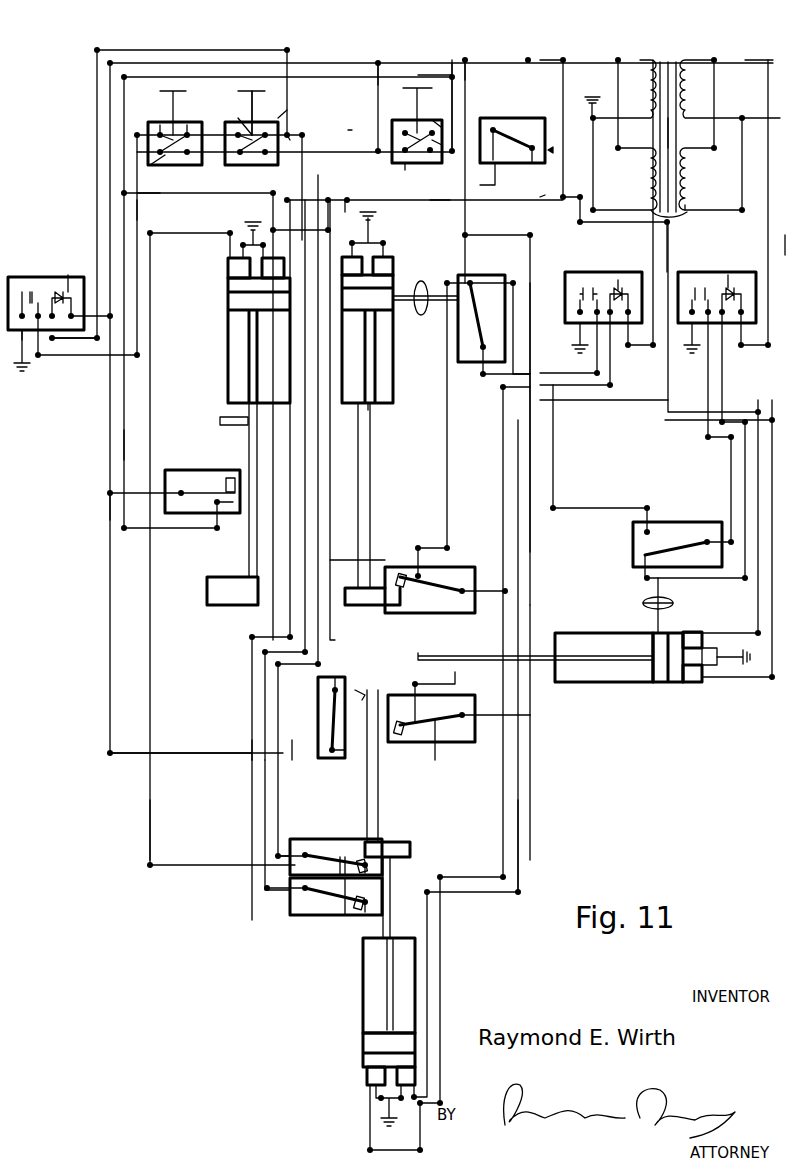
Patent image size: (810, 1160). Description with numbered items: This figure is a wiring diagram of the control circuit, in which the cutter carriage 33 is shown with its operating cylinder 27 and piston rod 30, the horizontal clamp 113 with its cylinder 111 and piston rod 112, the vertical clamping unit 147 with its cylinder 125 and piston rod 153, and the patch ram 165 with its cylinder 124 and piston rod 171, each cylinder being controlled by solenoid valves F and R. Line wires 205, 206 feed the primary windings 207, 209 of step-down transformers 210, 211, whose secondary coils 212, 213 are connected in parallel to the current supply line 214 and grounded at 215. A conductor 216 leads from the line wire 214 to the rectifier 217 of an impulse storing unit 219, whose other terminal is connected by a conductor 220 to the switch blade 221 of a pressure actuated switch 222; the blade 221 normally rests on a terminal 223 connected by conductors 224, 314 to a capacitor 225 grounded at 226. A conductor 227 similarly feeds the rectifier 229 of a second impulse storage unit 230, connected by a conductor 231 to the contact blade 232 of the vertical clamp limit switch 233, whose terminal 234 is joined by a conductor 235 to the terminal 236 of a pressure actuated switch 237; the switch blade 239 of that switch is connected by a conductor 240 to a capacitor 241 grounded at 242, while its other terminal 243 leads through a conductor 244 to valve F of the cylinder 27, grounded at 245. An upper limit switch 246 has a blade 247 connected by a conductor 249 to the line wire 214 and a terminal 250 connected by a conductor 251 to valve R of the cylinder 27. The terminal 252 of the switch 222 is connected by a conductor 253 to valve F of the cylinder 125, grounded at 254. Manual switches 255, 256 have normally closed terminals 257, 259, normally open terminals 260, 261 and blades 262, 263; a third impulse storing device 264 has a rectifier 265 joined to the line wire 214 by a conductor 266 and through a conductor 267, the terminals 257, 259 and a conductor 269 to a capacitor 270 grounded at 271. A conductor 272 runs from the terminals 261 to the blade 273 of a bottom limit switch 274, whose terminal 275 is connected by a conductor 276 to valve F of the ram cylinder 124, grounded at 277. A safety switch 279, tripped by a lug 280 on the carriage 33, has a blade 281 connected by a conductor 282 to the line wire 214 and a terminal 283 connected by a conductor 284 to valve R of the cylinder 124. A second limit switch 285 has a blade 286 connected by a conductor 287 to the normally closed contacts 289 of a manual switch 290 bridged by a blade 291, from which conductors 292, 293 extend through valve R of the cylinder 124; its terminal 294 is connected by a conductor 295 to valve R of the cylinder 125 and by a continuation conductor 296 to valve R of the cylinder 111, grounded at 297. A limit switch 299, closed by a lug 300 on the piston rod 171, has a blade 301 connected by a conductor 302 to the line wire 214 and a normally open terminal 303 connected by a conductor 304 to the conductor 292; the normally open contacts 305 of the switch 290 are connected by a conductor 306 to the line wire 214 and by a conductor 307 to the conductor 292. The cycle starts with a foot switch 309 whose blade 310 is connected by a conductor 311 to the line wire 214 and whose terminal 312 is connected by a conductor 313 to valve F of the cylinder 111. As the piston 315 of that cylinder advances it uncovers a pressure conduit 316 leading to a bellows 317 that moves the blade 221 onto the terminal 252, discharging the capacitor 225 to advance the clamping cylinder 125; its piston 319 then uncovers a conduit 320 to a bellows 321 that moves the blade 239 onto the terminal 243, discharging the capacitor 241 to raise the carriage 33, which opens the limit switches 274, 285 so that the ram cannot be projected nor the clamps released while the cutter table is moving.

The operating cylinder 27 is at (363, 1015).
The piston rod 30 is at (388, 985).
The cutter carriage 33 is at (386, 811).
The operating cylinder 111 is at (610, 690).
The piston rod 112 is at (545, 650).
The horizontal clamp 113 is at (450, 655).
The operating cylinder 124 is at (225, 375).
The operating cylinder 125 is at (384, 415).
The vertical clamping unit 147 is at (355, 612).
The piston rod 153 is at (372, 473).
The patch ram 165 is at (238, 618).
The piston rod 171 is at (252, 440).
The line wire 205 is at (765, 58).
The line wire 206 is at (765, 118).
The primary winding 207 is at (686, 65).
The primary winding 209 is at (688, 160).
The step-down transformer 210 is at (665, 60).
The step-down transformer 211 is at (690, 140).
The secondary coil 212 is at (648, 65).
The secondary coil 213 is at (690, 200).
The current supply line 214 is at (545, 60).
The ground 215 is at (610, 140).
The conductor 216 is at (570, 105).
The rectifier 217 is at (790, 228).
The impulse storing unit 219 is at (745, 262).
The conductor 220 is at (728, 360).
The switch blade 221 is at (683, 540).
The pressure actuated switch 222 is at (637, 545).
The terminal 223 is at (645, 565).
The conductor 224 is at (720, 540).
The capacitor 225 is at (712, 250).
The ground 226 is at (692, 345).
The conductor 227 is at (680, 235).
The rectifier 229 is at (640, 258).
The impulse storage unit 230 is at (652, 200).
The conductor 231 is at (605, 378).
The contact blade 232 is at (447, 582).
The vertical clamp limit switch 233 is at (450, 617).
The terminal 234 is at (415, 574).
The conductor 235 is at (445, 473).
The terminal 236 is at (468, 265).
The pressure actuated switch 237 is at (459, 376).
The switch blade 239 is at (478, 337).
The conductor 240 is at (493, 378).
The capacitor 241 is at (590, 283).
The ground 242 is at (585, 340).
The terminal 243 is at (510, 268).
The conductor 244 is at (530, 570).
The ground 245 is at (389, 1105).
The limit switch 246 is at (449, 735).
The blade 247 is at (437, 760).
The conductor 249 is at (530, 700).
The terminal 250 is at (395, 712).
The conductor 251 is at (518, 845).
The terminal 252 is at (650, 528).
The conductor 253 is at (553, 455).
The ground 254 is at (385, 222).
The manually operable switch 255 is at (146, 128).
The manually operable switch 256 is at (245, 118).
The normally closed terminals 257 is at (160, 133).
The normally closed terminals 259 is at (285, 118).
The normally open terminals 260 is at (165, 165).
The normally open terminals 261 is at (235, 165).
The manually operable blade 262 is at (225, 108).
The manually operable blade 263 is at (290, 135).
The impulse storing device 264 is at (22, 268).
The rectifier 265 is at (85, 240).
The conductor 266 is at (108, 316).
The conductor 267 is at (260, 100).
The conductor 269 is at (135, 210).
The capacitor 270 is at (30, 292).
The ground 271 is at (12, 360).
The conductor 272 is at (318, 175).
The switch blade 273 is at (338, 860).
The limit switch 274 is at (362, 834).
The switch terminal 275 is at (372, 858).
The conductor 276 is at (150, 830).
The ground 277 is at (252, 222).
The safety switch 279 is at (337, 762).
The lug 280 is at (355, 690).
The blade 281 is at (332, 722).
The conductor 282 is at (238, 753).
The terminal 283 is at (330, 698).
The conductor 284 is at (335, 656).
The limit switch 285 is at (300, 912).
The blade 286 is at (320, 912).
The conductor 287 is at (352, 130).
The normally closed contacts 289 is at (405, 130).
The manually operable switch 290 is at (441, 120).
The switch blade 291 is at (445, 140).
The conductor 292 is at (420, 75).
The conductor 293 is at (147, 193).
The limit switch terminal 294 is at (338, 920).
The conductor 295 is at (345, 212).
The continuation conductor 296 is at (440, 200).
The ground 297 is at (735, 690).
The limit switch 299 is at (184, 528).
The lug 300 is at (225, 420).
The blade 301 is at (205, 492).
The conductor 302 is at (135, 493).
The normally open terminal 303 is at (232, 510).
The conductor 304 is at (124, 445).
The normally open contacts 305 is at (410, 163).
The conductor 306 is at (380, 80).
The conductor 307 is at (452, 60).
The foot actuated switch 309 is at (548, 150).
The blade 310 is at (535, 125).
The conductor 311 is at (515, 62).
The normally open terminal 312 is at (495, 163).
The conductor 313 is at (545, 197).
The conductor 314 is at (731, 455).
The piston 315 is at (660, 700).
The pressure conduit 316 is at (665, 615).
The bellows 317 is at (645, 608).
The piston 319 is at (380, 310).
The pressure conduit 320 is at (405, 290).
The bellows 321 is at (450, 275).